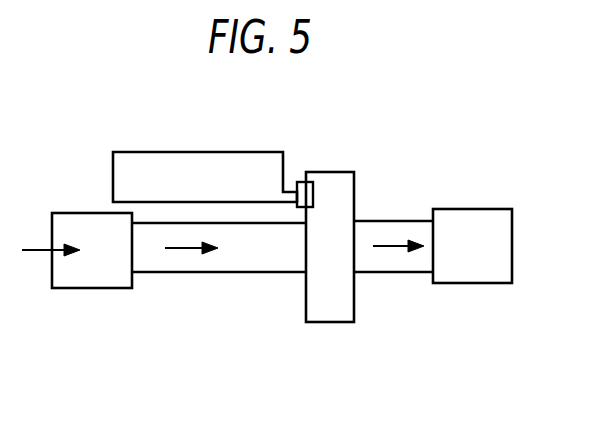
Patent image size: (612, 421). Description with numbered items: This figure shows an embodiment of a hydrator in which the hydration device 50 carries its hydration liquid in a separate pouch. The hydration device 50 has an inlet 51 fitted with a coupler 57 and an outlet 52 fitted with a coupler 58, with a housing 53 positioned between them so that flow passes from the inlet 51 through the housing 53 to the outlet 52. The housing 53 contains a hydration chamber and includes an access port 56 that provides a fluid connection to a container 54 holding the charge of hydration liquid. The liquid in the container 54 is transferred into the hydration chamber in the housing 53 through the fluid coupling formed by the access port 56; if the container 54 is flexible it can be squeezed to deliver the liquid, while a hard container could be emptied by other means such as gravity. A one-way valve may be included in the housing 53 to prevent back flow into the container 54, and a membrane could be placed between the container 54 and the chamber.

The hydration device 50 is at (378, 172).
The inlet 51 is at (167, 273).
The outlet 52 is at (416, 274).
The housing 53 is at (326, 322).
The container 54 is at (233, 152).
The access port 56 is at (292, 190).
The coupler 57 is at (72, 210).
The coupler 58 is at (476, 207).